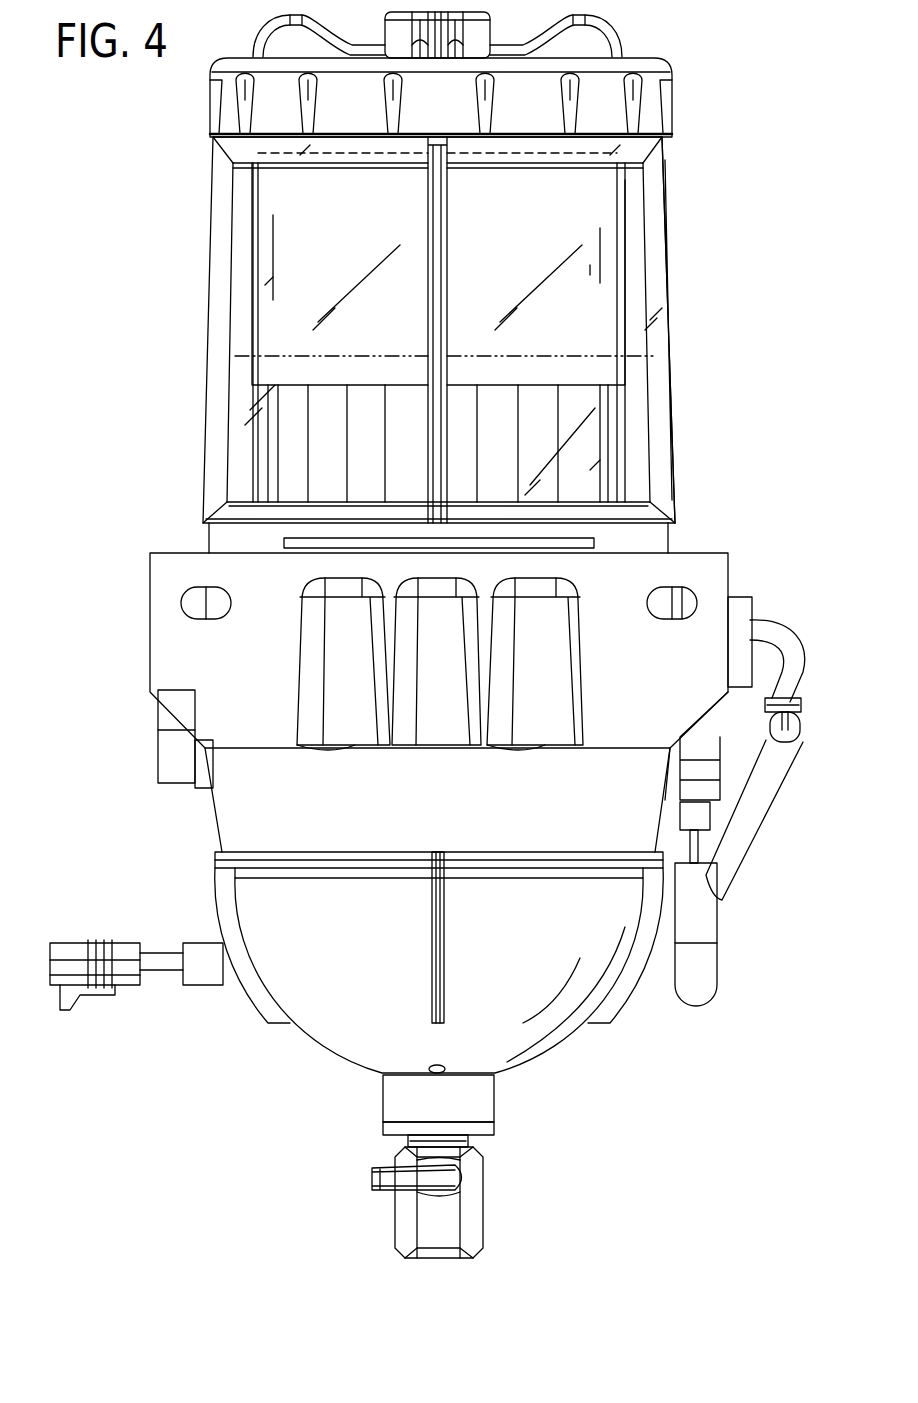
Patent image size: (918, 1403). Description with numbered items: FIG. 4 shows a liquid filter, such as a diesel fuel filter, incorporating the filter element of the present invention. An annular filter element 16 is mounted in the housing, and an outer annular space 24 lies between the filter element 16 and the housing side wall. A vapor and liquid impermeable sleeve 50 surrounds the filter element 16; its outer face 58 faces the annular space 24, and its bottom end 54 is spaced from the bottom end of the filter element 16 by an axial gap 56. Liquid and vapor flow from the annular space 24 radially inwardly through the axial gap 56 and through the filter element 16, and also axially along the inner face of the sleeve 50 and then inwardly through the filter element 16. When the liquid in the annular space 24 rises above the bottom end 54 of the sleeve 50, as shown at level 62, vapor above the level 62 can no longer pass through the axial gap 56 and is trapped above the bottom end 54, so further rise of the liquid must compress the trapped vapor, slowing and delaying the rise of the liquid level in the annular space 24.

The filter element 16 is at (288, 436).
The sleeve 50 is at (278, 262).
The annular space 24 is at (636, 207).
The outer face 58 is at (628, 247).
The level 62 is at (670, 332).
The bottom end 54 is at (625, 385).
The axial gap 56 is at (633, 455).